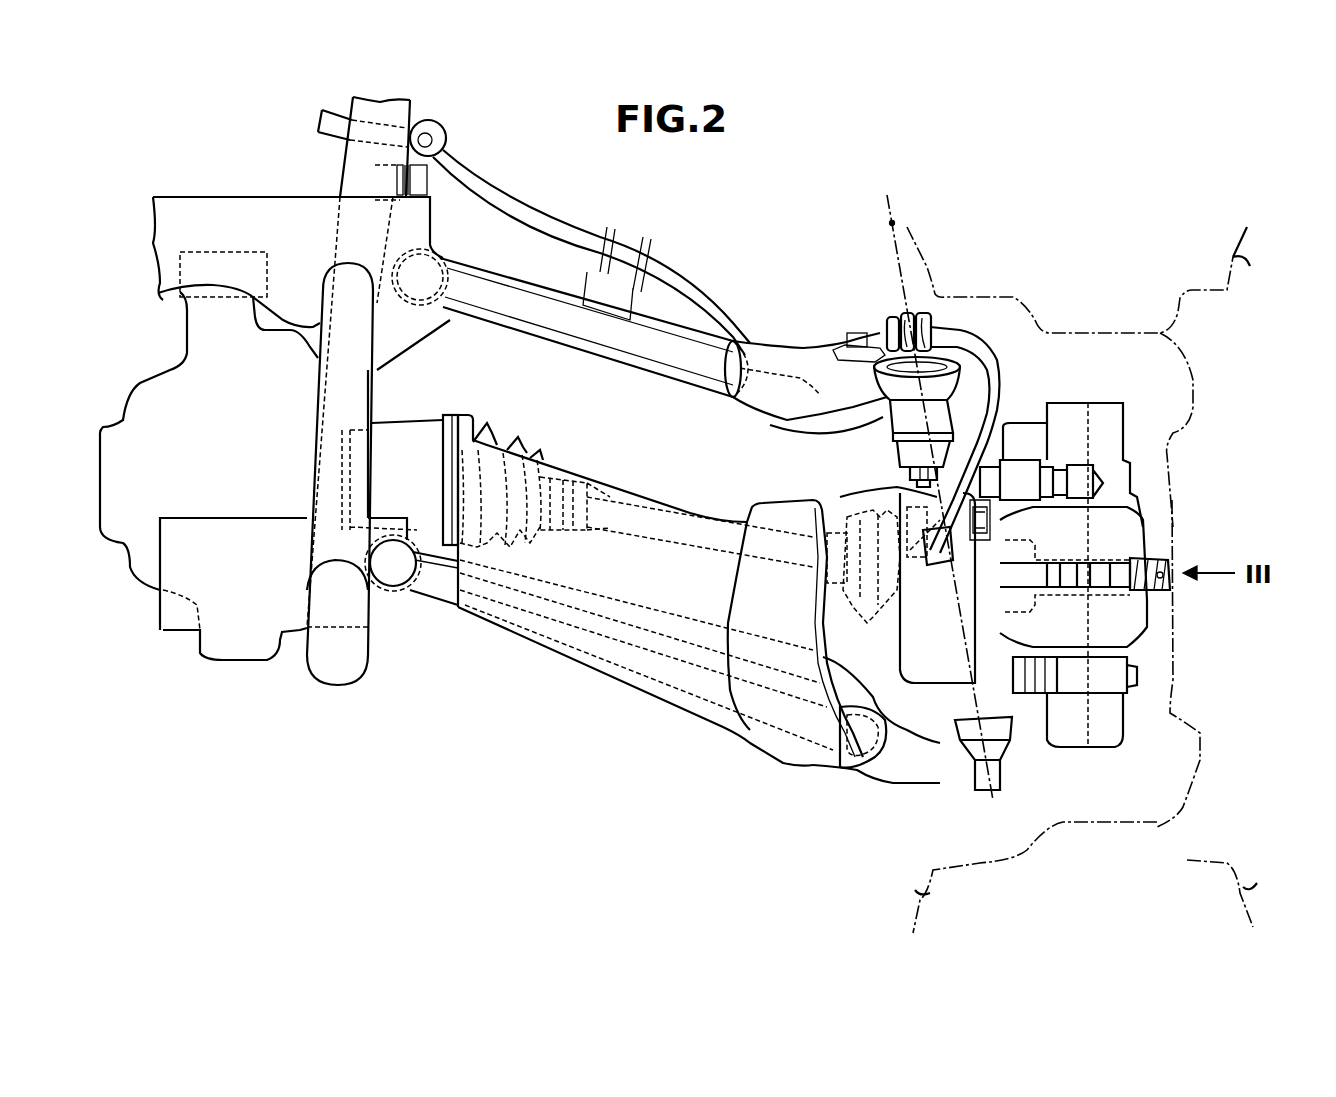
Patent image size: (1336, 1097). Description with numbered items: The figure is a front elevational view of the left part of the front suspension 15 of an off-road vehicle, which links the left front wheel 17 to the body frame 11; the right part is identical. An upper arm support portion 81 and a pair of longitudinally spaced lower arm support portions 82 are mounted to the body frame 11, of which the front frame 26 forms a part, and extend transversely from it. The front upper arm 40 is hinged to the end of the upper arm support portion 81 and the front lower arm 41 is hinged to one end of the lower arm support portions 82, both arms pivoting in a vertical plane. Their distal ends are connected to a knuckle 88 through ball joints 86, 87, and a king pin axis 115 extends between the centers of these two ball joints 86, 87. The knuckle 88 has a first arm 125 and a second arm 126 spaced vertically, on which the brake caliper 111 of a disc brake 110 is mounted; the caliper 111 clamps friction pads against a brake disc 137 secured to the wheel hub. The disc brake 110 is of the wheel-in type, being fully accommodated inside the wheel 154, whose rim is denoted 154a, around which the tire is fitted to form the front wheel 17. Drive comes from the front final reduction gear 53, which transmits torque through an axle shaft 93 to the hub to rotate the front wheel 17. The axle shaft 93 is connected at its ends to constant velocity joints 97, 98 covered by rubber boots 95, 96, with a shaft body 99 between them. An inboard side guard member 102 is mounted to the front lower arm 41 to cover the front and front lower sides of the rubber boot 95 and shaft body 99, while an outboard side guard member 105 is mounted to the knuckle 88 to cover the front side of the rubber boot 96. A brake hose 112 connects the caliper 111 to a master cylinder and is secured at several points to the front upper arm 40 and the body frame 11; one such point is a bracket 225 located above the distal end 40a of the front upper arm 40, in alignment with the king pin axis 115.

The body frame 11 is at (333, 178).
The front suspension 15 is at (738, 210).
The front wheel 17 is at (1185, 377).
The front frame 26 is at (333, 677).
The front upper arm 40 is at (580, 355).
The distal end of the front upper arm 40a is at (807, 363).
The front lower arm 41 is at (433, 607).
The front final reduction gear 53 is at (160, 397).
The upper arm support portion 81 is at (172, 210).
The lower arm support portion 82 is at (183, 617).
The ball joint 86 is at (893, 413).
The ball joint 87 is at (1017, 730).
The knuckle 88 is at (973, 413).
The axle shaft 93 is at (653, 493).
The rubber boot 95 is at (505, 440).
The rubber boot 96 is at (877, 515).
The constant velocity joint 97 is at (453, 410).
The constant velocity joint 98 is at (843, 520).
The shaft body 99 is at (613, 497).
The inboard side guard member 102 is at (582, 673).
The outboard side guard member 105 is at (890, 667).
The disc brake 110 is at (1137, 487).
The brake caliper 111 is at (1128, 535).
The brake hose 112 is at (535, 218).
The king pin axis 115 is at (892, 223).
The first arm 125 is at (1020, 430).
The second arm 126 is at (1033, 717).
The brake disc 137 is at (1097, 627).
The wheel 154 is at (1172, 680).
The rim 154a is at (1063, 823).
The bracket 225 is at (920, 345).